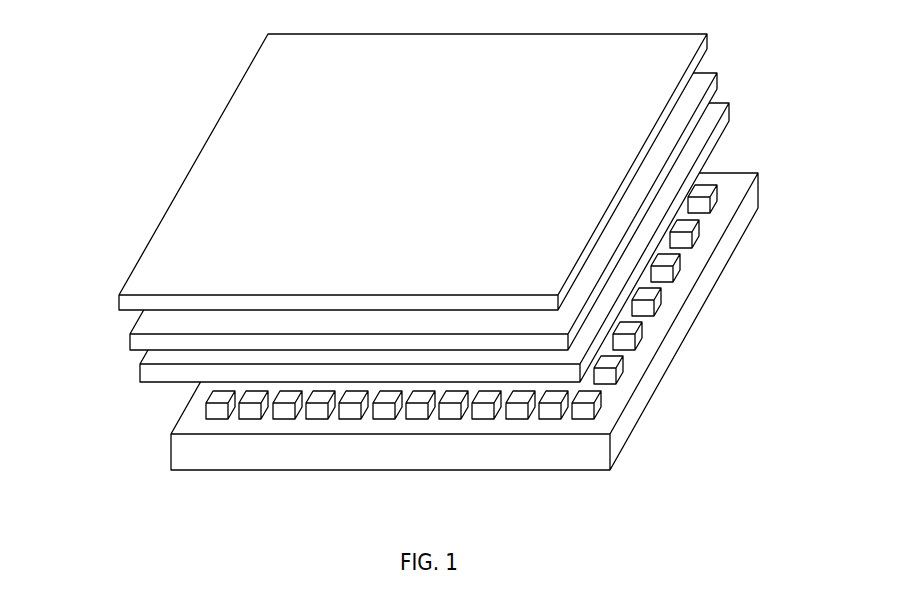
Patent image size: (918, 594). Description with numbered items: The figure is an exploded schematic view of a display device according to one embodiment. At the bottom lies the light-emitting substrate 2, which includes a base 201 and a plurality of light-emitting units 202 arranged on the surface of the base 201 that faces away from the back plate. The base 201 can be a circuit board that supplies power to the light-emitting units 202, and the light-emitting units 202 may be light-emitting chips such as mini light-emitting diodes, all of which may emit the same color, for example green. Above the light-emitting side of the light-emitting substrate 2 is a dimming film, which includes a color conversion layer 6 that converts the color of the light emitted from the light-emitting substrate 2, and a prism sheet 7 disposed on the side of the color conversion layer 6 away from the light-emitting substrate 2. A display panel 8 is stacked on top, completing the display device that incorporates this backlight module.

The light-emitting substrate 2 is at (476, 321).
The base 201 is at (625, 423).
The light-emitting unit 202 is at (632, 331).
The color conversion layer 6 is at (140, 378).
The prism sheet 7 is at (132, 343).
The display panel 8 is at (155, 267).